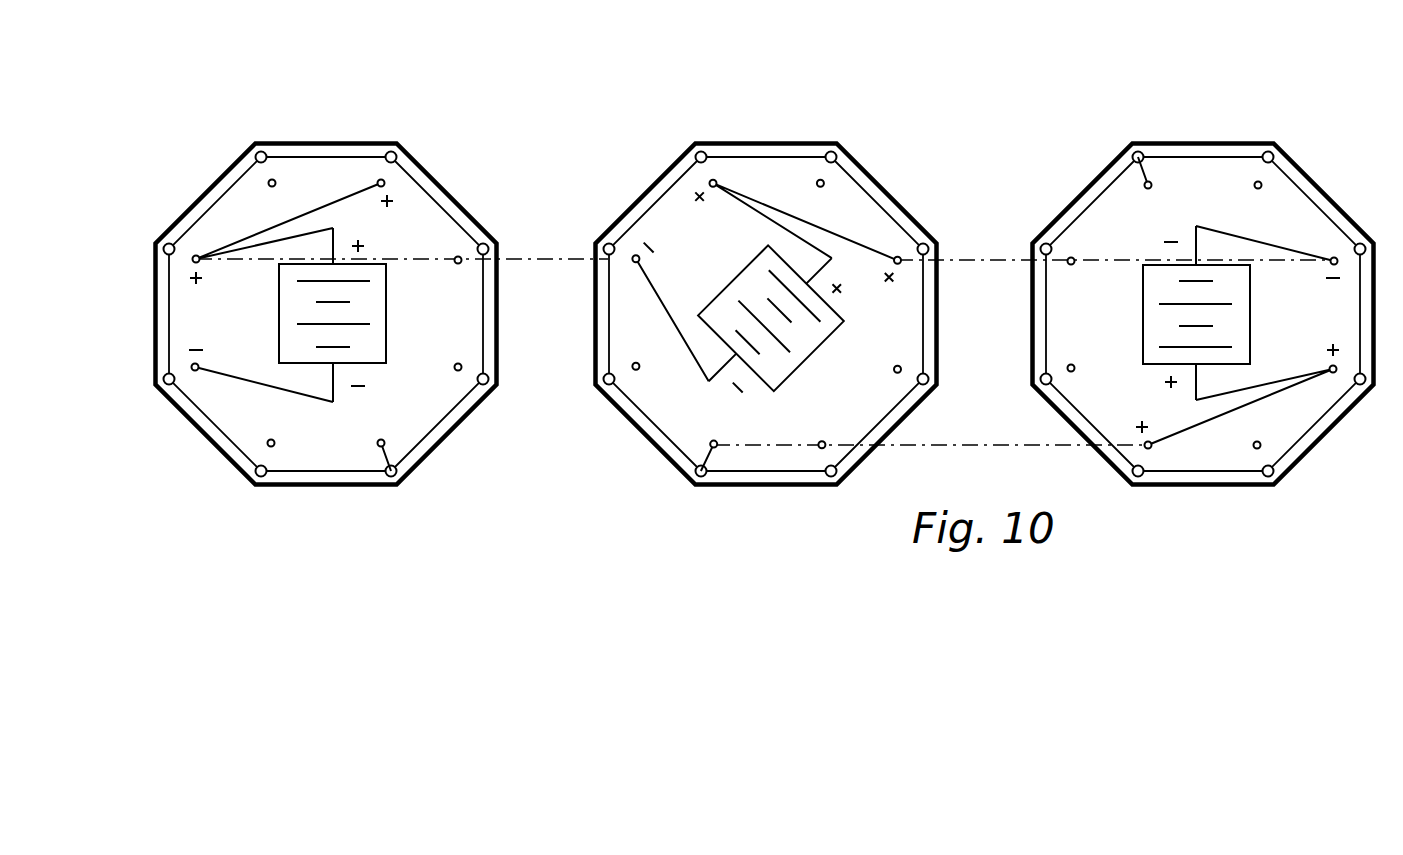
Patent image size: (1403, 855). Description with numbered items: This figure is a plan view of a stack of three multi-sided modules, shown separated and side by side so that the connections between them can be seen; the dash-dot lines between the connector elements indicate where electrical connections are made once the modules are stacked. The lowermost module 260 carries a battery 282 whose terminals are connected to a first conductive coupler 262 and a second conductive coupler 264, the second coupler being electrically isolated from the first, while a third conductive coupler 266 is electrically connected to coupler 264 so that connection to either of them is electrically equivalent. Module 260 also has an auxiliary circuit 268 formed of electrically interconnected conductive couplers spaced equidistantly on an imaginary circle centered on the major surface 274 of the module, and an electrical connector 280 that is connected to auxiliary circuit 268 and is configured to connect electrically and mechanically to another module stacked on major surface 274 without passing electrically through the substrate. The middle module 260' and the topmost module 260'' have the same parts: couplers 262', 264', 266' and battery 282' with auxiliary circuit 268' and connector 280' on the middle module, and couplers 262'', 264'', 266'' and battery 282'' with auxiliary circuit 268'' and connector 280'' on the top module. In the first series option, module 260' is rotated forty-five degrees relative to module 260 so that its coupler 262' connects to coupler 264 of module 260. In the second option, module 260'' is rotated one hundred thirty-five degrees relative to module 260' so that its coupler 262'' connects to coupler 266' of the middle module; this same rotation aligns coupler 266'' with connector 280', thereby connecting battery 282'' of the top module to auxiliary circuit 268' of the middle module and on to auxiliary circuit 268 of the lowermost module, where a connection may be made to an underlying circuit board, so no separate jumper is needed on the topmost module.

The multi-sided module 260 is at (322, 272).
The first conductive coupler 262 is at (176, 410).
The second conductive coupler 264 is at (174, 220).
The third conductive coupler 266 is at (360, 154).
The auxiliary circuit 268 is at (348, 314).
The major surface 274 is at (415, 403).
The electrical connector 280 is at (414, 494).
The battery 282 is at (293, 313).
The module 260' is at (746, 270).
The coupler 262' is at (590, 270).
The coupler 264' is at (750, 151).
The coupler 266' is at (931, 228).
The auxiliary circuit 268' is at (781, 312).
The connector 280' is at (689, 419).
The battery 282' is at (783, 328).
The module 260'' is at (1182, 270).
The coupler 262'' is at (1348, 210).
The coupler 264'' is at (1347, 415).
The coupler 266'' is at (1174, 478).
The auxiliary circuit 268'' is at (1203, 340).
The connector 280'' is at (1184, 135).
The battery 282'' is at (1162, 314).